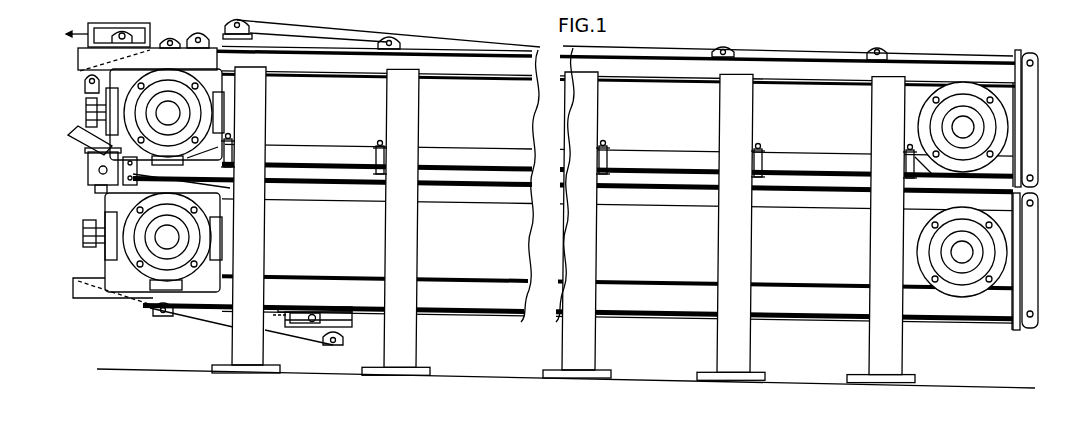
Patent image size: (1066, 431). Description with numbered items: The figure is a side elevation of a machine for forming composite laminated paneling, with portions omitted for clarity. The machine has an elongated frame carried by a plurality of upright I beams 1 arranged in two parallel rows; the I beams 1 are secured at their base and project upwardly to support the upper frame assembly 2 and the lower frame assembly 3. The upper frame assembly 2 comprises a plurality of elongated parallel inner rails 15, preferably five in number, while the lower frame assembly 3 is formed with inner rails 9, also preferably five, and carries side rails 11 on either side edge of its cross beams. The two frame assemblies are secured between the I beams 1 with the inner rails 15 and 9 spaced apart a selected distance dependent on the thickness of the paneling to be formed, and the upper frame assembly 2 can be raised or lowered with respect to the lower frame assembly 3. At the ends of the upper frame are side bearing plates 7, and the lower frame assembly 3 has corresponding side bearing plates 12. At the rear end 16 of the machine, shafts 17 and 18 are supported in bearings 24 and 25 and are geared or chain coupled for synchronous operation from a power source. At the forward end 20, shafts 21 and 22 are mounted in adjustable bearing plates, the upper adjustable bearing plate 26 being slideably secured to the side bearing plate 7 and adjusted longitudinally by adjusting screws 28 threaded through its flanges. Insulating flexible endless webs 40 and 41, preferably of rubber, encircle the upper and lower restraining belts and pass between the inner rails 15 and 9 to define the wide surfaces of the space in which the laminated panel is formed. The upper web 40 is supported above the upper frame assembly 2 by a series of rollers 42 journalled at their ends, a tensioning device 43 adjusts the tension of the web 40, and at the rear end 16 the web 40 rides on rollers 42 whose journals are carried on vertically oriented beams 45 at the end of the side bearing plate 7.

The I beam 1 is at (253, 141).
The upper frame assembly 2 is at (458, 66).
The lower frame assembly 3 is at (463, 297).
The side bearing plate 7 is at (227, 108).
The inner rail 9 is at (488, 193).
The side rail 11 is at (495, 298).
The side bearing plate 12 is at (224, 213).
The inner rail 15 is at (477, 155).
The rear end 16 is at (1043, 52).
The shaft 17 is at (963, 126).
The shaft 18 is at (962, 253).
The forward end 20 is at (530, 194).
The shaft 21 is at (167, 113).
The shaft 22 is at (167, 237).
The bearing 24 is at (947, 90).
The bearing 25 is at (967, 213).
The adjustable bearing plate 26 is at (120, 122).
The adjusting screw 28 is at (86, 99).
The insulating web 40 is at (291, 25).
The insulating web 41 is at (203, 323).
The roller 42 is at (727, 42).
The tensioning device 43 is at (122, 24).
The vertically oriented beam 45 is at (1019, 50).